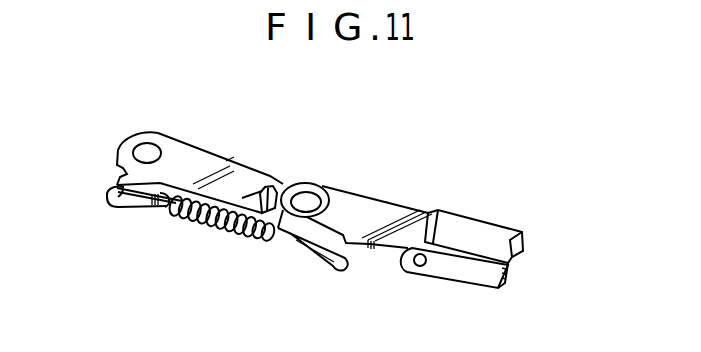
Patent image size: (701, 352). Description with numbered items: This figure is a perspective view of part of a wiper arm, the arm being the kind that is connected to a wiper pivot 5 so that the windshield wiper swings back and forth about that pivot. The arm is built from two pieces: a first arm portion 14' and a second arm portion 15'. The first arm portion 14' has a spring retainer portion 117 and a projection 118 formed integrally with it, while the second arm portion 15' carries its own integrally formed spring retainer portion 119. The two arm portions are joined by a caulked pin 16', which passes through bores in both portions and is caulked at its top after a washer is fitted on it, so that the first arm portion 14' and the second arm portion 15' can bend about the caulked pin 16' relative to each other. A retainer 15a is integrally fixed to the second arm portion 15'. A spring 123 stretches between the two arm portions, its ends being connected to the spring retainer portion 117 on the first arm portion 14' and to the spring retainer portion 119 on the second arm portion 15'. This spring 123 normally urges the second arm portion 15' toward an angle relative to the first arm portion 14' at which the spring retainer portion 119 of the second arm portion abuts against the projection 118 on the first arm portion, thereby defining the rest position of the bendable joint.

The wiper pivot 5 is at (146, 151).
The first arm portion 14' is at (200, 162).
The projection 118 is at (272, 186).
The caulked pin 16' is at (314, 176).
The second arm portion 15' is at (393, 219).
The retainer 15a is at (474, 231).
The spring retainer portion 117 is at (120, 210).
The spring 123 is at (236, 240).
The spring retainer portion 119 is at (327, 273).